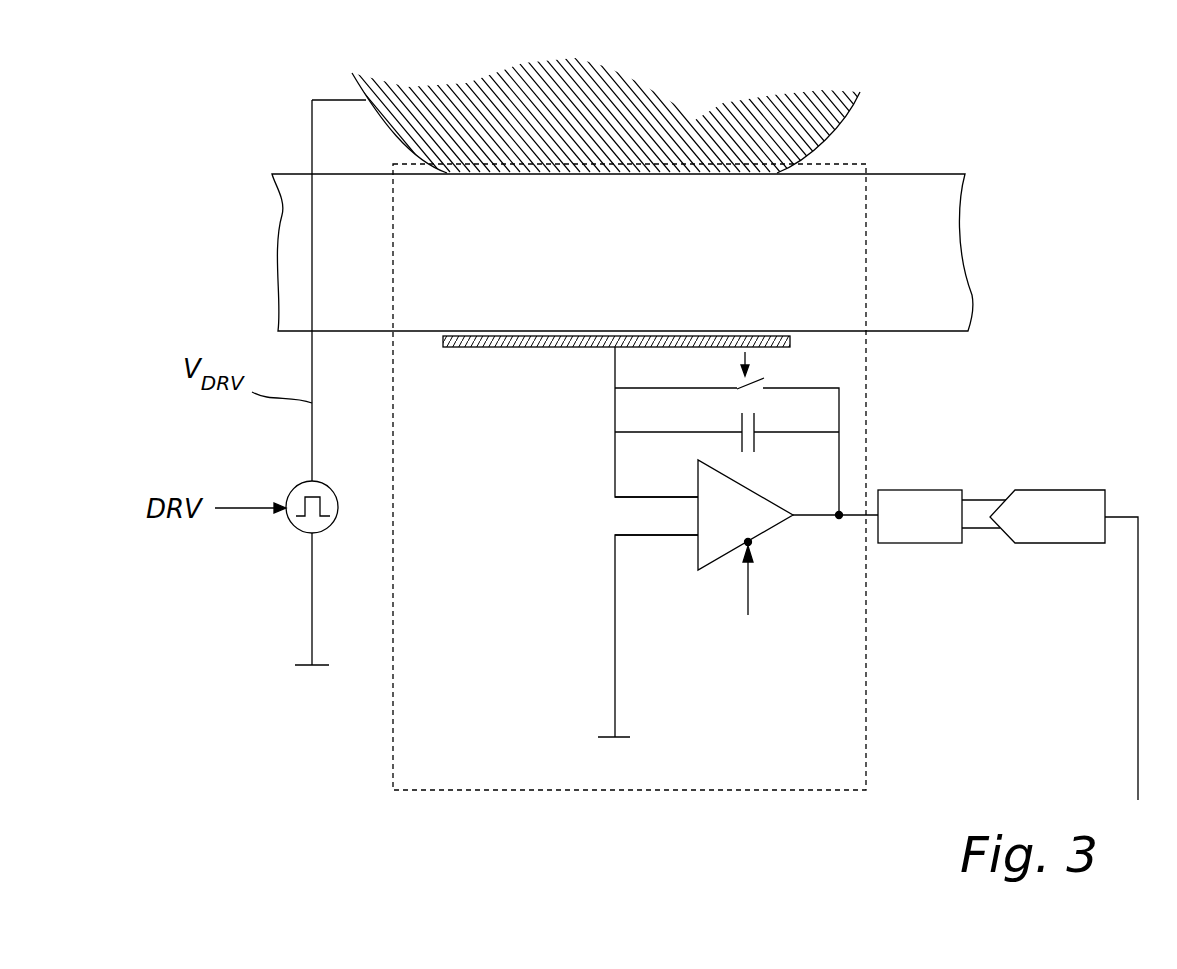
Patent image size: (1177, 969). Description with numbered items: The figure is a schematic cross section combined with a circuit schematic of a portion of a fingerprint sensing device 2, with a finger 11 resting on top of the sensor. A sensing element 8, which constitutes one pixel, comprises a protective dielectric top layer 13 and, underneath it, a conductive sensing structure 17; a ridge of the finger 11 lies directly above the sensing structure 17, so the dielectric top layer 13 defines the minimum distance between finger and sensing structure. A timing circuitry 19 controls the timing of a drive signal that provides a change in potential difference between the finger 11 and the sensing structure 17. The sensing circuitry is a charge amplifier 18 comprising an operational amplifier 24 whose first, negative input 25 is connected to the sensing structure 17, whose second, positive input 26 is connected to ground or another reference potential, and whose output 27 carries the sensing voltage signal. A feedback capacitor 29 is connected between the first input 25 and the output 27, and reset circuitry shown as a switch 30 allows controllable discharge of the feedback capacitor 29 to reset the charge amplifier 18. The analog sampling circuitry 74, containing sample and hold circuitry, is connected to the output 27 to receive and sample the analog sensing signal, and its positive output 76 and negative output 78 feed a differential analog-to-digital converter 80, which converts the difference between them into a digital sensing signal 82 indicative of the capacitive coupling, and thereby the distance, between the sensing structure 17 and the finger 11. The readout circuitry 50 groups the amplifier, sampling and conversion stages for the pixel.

The fingerprint sensing device 2 is at (978, 117).
The sensing element 8 is at (411, 676).
The finger 11 is at (686, 127).
The protective dielectric top layer 13 is at (343, 308).
The conductive sensing structure 17 is at (520, 347).
The charge amplifier 18 is at (571, 525).
The timing circuitry 19 is at (296, 530).
The operational amplifier 24 is at (712, 572).
The first input 25 is at (695, 495).
The second input 26 is at (695, 540).
The output 27 is at (793, 518).
The feedback capacitor 29 is at (758, 440).
The reset switch 30 is at (740, 383).
The readout circuitry 50 is at (676, 604).
The analog sampling circuitry 74 is at (915, 490).
The positive output 76 is at (975, 498).
The negative output 78 is at (968, 545).
The analog-to-digital converter 80 is at (1058, 490).
The digital sensing signal 82 is at (1125, 520).